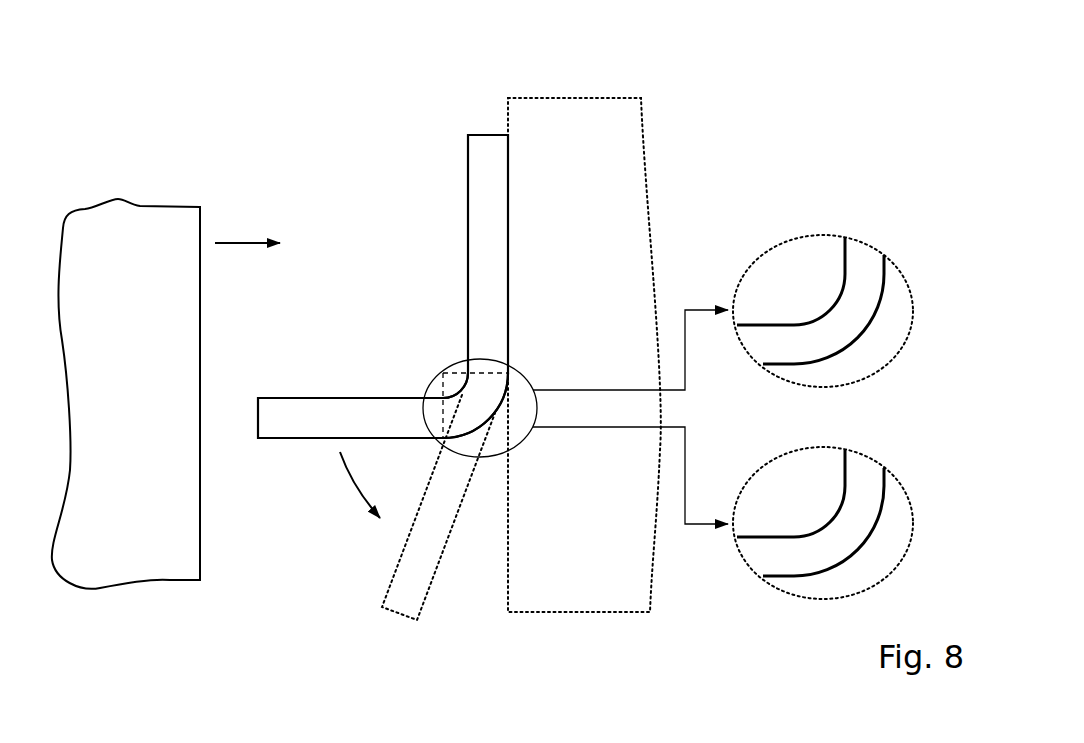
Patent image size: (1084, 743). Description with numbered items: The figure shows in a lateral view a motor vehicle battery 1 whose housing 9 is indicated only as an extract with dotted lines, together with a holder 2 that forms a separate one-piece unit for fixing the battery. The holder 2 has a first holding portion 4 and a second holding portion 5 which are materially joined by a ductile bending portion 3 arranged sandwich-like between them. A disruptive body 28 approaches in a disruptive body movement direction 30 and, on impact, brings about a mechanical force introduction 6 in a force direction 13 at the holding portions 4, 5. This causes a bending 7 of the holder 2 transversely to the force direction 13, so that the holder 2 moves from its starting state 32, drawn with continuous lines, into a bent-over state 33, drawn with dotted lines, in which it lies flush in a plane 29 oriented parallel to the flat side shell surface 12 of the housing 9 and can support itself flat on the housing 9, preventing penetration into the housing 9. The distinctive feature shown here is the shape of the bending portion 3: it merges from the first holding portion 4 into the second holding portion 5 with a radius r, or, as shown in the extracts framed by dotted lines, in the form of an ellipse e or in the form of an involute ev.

The motor vehicle battery 1 is at (342, 118).
The disruptive body 28 is at (130, 226).
The disruptive body movement direction 30 is at (277, 199).
The force introduction 6 is at (277, 199).
The force direction 13 is at (246, 240).
The holder 2 is at (458, 400).
The starting state 32 is at (458, 286).
The bent-over state 33 is at (427, 572).
The first holding portion 4 is at (476, 237).
The second holding portion 5 is at (375, 410).
The bending portion 3 is at (472, 398).
The radius r is at (497, 414).
The housing 9 is at (611, 120).
The flat side shell surface 12 is at (512, 75).
The plane 29 is at (505, 116).
The bending 7 is at (336, 502).
The ellipse e is at (860, 340).
The involute ev is at (860, 552).